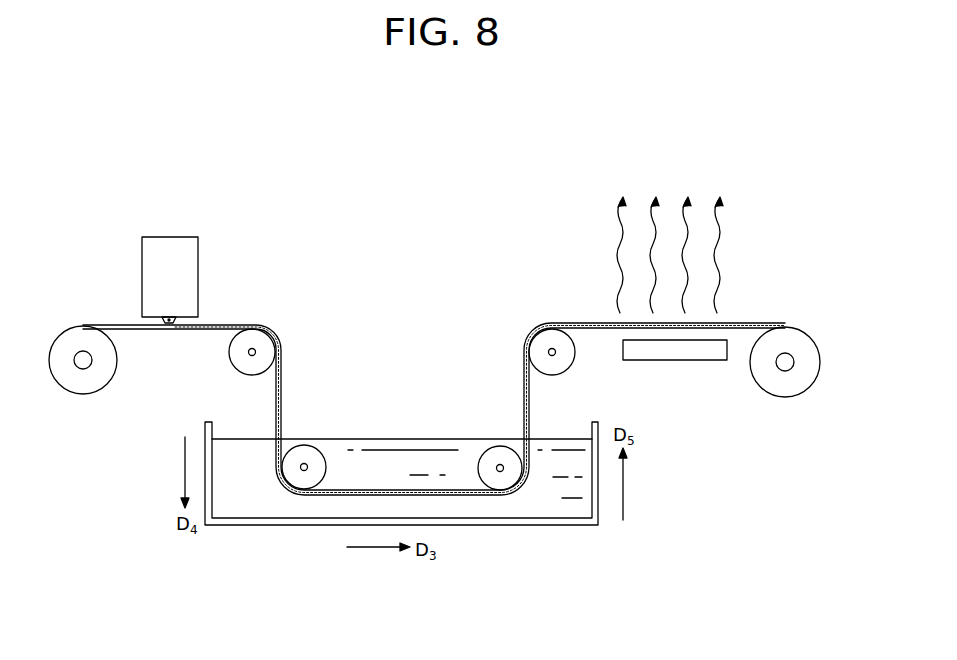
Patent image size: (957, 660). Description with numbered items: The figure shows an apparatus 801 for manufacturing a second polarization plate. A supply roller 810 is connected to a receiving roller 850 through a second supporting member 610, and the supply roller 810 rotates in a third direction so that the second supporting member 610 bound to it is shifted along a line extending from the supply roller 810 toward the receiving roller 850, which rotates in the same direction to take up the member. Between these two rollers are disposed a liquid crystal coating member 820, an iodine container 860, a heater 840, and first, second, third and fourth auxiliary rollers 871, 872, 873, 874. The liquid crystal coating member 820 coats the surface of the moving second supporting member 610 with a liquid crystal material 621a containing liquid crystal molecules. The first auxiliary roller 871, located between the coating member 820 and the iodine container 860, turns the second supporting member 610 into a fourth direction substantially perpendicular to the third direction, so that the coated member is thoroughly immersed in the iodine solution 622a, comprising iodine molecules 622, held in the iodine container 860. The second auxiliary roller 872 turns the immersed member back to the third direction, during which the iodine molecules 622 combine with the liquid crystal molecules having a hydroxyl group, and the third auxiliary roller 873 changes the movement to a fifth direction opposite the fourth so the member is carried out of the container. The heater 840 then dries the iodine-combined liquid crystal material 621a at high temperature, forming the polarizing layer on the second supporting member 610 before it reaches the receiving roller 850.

The apparatus for manufacturing a second polarization plate 801 is at (429, 156).
The second supporting member 610 is at (148, 330).
The liquid crystal material 621a is at (250, 323).
The supply roller 810 is at (83, 395).
The liquid crystal coating member 820 is at (168, 236).
The first auxiliary roller 871 is at (232, 366).
The second auxiliary roller 872 is at (305, 446).
The third auxiliary roller 873 is at (502, 447).
The fourth auxiliary roller 874 is at (572, 363).
The heater 840 is at (697, 361).
The receiving roller 850 is at (785, 398).
The iodine container 860 is at (505, 526).
The iodine molecules 622 is at (571, 498).
The iodine solution 622a is at (235, 498).